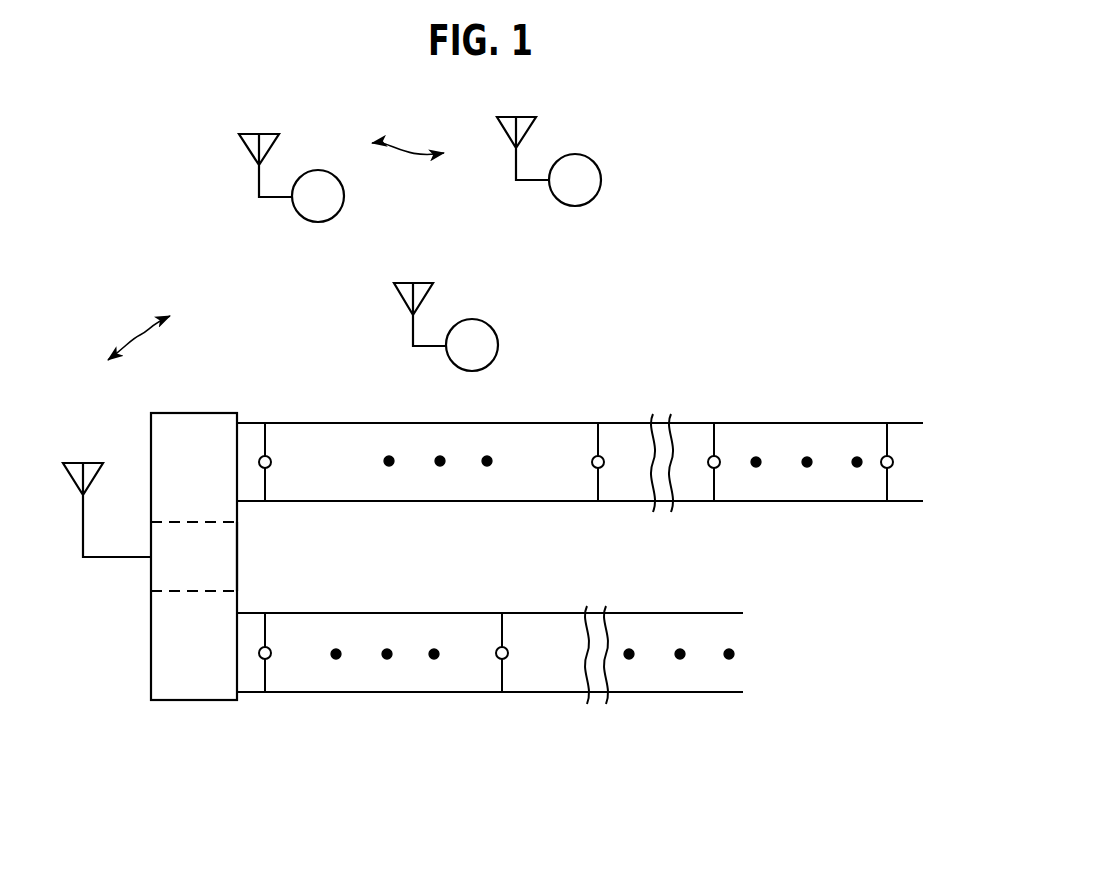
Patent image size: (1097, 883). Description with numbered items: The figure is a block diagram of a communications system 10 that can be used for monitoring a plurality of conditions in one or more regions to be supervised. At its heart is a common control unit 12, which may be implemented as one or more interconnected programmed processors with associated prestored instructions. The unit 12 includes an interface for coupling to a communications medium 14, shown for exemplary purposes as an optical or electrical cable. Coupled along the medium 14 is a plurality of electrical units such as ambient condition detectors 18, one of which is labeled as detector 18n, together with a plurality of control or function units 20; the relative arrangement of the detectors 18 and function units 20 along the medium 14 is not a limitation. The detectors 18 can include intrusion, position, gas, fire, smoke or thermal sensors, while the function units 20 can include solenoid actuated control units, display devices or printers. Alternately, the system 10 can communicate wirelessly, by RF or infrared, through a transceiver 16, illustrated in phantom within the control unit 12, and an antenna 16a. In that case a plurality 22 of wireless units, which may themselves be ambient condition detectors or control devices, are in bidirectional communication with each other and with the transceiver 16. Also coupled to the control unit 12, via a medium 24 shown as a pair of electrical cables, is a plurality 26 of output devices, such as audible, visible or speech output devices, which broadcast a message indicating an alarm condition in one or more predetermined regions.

The communications system 10 is at (818, 270).
The common control unit 12 is at (194, 556).
The communications medium 14 is at (348, 408).
The transceiver 16 is at (238, 570).
The antenna 16a is at (93, 462).
The ambient condition detectors 18 is at (508, 404).
The ambient condition detector 18n is at (604, 466).
The control or function units 20 is at (767, 392).
The plurality of wireless units 22 is at (697, 204).
The medium 24 is at (333, 603).
The plurality of output devices 26 is at (526, 762).